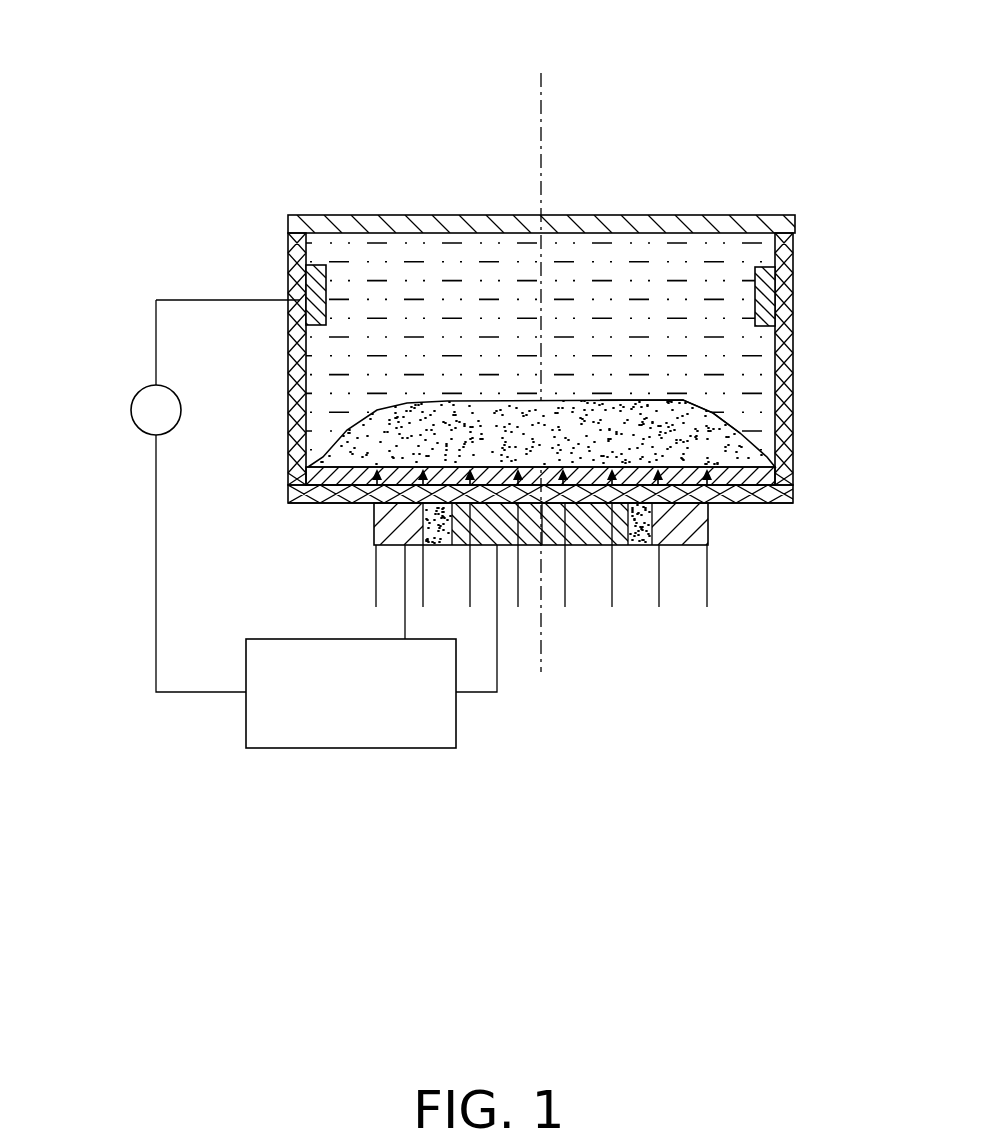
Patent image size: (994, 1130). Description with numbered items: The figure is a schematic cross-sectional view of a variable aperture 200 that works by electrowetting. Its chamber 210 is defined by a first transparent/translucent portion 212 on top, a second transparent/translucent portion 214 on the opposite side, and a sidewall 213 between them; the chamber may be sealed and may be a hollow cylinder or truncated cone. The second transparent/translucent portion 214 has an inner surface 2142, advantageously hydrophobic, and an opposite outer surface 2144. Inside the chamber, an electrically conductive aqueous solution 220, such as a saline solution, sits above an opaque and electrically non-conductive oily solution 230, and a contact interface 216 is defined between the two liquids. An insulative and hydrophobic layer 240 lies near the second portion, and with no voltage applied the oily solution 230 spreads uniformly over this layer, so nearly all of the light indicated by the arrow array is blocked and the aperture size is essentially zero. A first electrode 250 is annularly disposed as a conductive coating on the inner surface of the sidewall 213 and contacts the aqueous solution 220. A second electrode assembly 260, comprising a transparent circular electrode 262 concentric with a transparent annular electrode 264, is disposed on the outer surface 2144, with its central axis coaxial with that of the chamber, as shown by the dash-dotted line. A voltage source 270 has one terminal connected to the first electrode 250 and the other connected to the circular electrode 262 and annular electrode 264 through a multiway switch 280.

The variable aperture 200 is at (488, 19).
The chamber 210 is at (731, 228).
The first transparent/translucent portion 212 is at (597, 220).
The sidewall 213 is at (783, 252).
The second transparent/translucent portion 214 is at (772, 495).
The inner surface 2142 is at (311, 476).
The outer surface 2144 is at (298, 512).
The contact interface 216 is at (690, 401).
The electrically conductive aqueous solution 220 is at (742, 353).
The opaque and electrically non-conductive oily solution 230 is at (728, 437).
The insulative and hydrophobic layer 240 is at (770, 472).
The first electrode 250 is at (762, 293).
The second electrode assembly 260 is at (745, 696).
The circular electrode 262 is at (588, 545).
The annular electrode 264 is at (683, 545).
The voltage source 270 is at (138, 412).
The multiway switch 280 is at (363, 749).